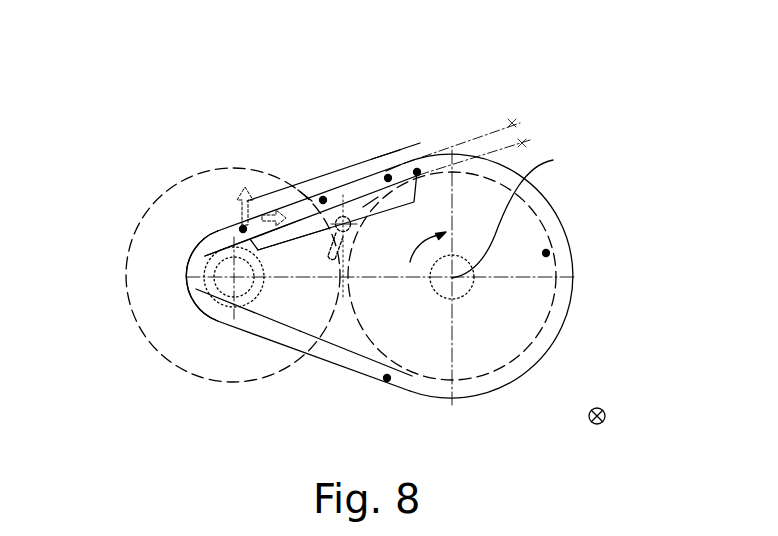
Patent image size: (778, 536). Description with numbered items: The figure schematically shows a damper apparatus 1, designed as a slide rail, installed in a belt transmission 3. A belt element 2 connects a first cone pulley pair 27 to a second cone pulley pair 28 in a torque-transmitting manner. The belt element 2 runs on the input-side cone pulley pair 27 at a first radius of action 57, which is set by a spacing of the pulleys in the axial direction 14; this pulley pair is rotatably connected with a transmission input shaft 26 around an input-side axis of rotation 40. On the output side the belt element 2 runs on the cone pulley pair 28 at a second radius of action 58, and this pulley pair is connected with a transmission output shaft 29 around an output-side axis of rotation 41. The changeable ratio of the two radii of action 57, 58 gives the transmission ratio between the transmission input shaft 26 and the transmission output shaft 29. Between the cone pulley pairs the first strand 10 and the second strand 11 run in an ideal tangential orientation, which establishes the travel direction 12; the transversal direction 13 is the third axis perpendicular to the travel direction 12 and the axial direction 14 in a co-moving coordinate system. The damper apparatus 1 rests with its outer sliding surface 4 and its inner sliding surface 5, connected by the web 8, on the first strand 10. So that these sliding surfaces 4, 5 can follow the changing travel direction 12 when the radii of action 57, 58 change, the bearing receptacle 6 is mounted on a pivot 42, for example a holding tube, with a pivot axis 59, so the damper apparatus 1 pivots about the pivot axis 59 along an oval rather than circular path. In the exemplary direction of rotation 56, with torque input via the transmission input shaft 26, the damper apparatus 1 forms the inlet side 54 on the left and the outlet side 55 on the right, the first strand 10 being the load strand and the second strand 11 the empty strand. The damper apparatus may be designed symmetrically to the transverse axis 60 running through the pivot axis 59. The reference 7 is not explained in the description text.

The damper apparatus 1 is at (276, 180).
The belt element 2 is at (546, 207).
The belt transmission 3 is at (600, 40).
The outer sliding surface 4 is at (298, 216).
The inner sliding surface 5 is at (372, 152).
The bearing receptacle 6 is at (352, 253).
The pivot axis line 7 is at (523, 137).
The web 8 is at (316, 192).
The first strand 10 is at (388, 175).
The second strand 11 is at (387, 382).
The travel direction 12 is at (258, 200).
The transversal direction 13 is at (242, 226).
The axial direction 14 is at (605, 421).
The transmission input shaft 26 is at (471, 308).
The first cone pulley pair 27 is at (548, 253).
The second cone pulley pair 28 is at (150, 257).
The transmission output shaft 29 is at (208, 258).
The input-side axis of rotation 40 is at (517, 209).
The output-side axis of rotation 41 is at (200, 311).
The pivot 42 is at (358, 244).
The inlet side 54 is at (206, 253).
The outlet side 55 is at (417, 169).
The direction of rotation 56 is at (426, 233).
The first radius of action 57 is at (560, 304).
The second radius of action 58 is at (255, 318).
The pivot axis 59 is at (344, 184).
The transverse axis 60 is at (323, 197).